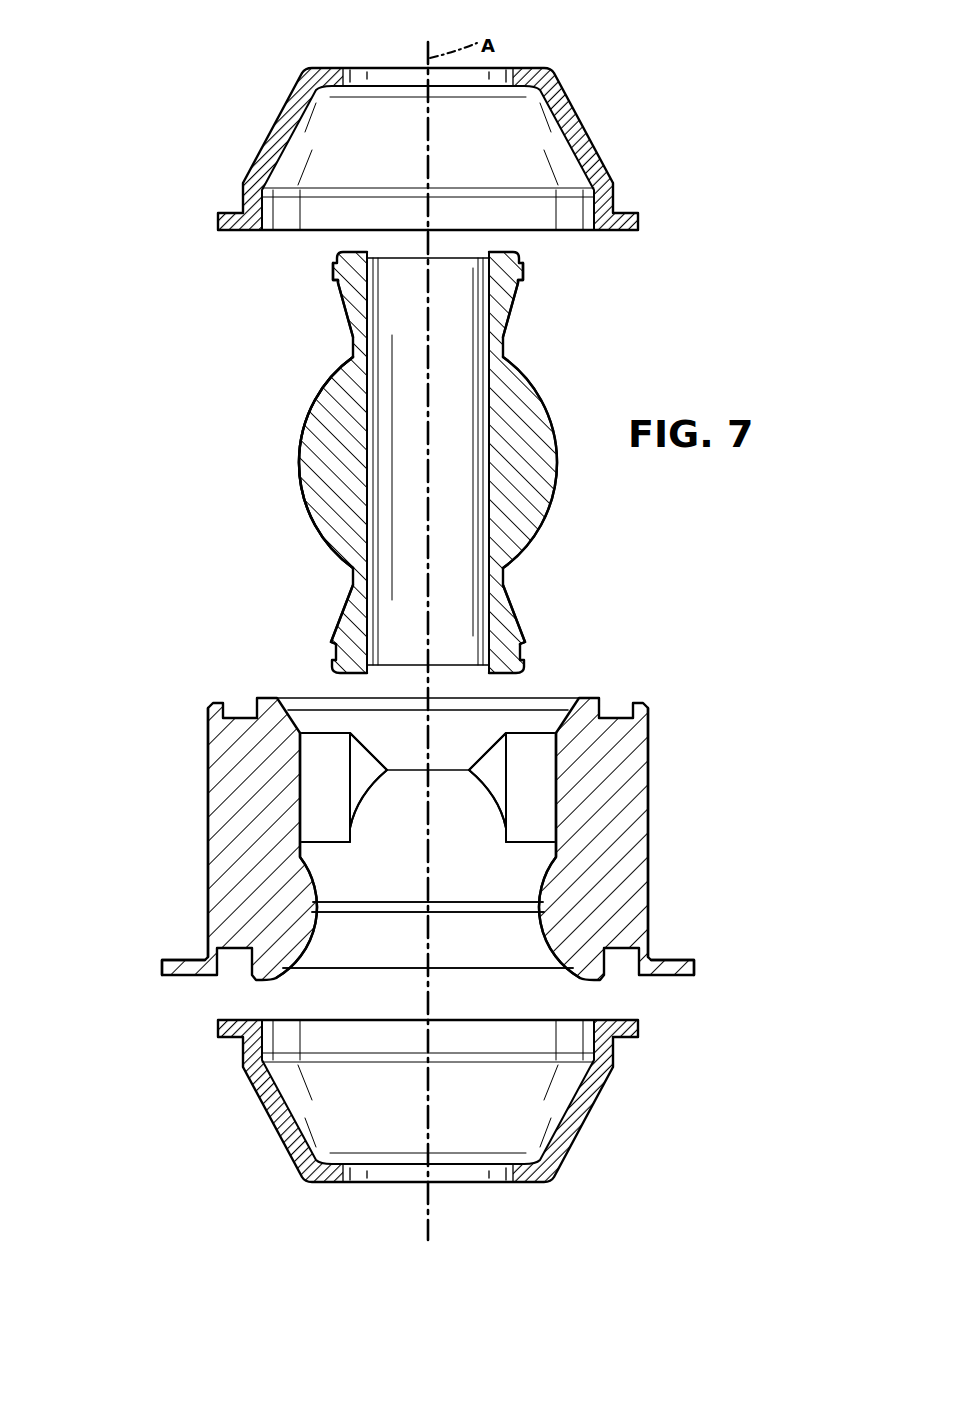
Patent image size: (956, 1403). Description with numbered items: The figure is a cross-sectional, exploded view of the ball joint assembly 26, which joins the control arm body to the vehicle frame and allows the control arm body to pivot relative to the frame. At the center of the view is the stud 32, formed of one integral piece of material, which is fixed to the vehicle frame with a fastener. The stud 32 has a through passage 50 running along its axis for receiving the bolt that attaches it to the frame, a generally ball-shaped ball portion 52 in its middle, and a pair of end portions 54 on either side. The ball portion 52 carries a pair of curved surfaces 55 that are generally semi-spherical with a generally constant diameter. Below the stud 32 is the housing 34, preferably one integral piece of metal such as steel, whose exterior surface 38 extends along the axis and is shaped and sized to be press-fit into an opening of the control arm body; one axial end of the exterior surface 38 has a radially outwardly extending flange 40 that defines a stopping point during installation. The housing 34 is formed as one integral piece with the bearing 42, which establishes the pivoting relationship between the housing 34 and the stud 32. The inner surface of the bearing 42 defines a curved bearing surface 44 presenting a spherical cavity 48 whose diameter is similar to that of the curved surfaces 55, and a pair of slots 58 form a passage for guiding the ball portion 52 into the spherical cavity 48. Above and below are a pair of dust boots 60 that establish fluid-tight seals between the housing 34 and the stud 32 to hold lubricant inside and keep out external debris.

The ball joint assembly 26 is at (699, 291).
The stud 32 is at (530, 289).
The housing 34 is at (207, 883).
The exterior surface 38 is at (650, 858).
The flange 40 is at (668, 960).
The bearing 42 is at (558, 872).
The curved bearing surface 44 is at (317, 880).
The spherical cavity 48 is at (452, 884).
The through passage 50 is at (372, 602).
The ball portion 52 is at (517, 438).
The end portions 54 is at (352, 280).
The curved surfaces 55 is at (297, 462).
The slots 58 is at (303, 768).
The dust boots 60 is at (590, 134).